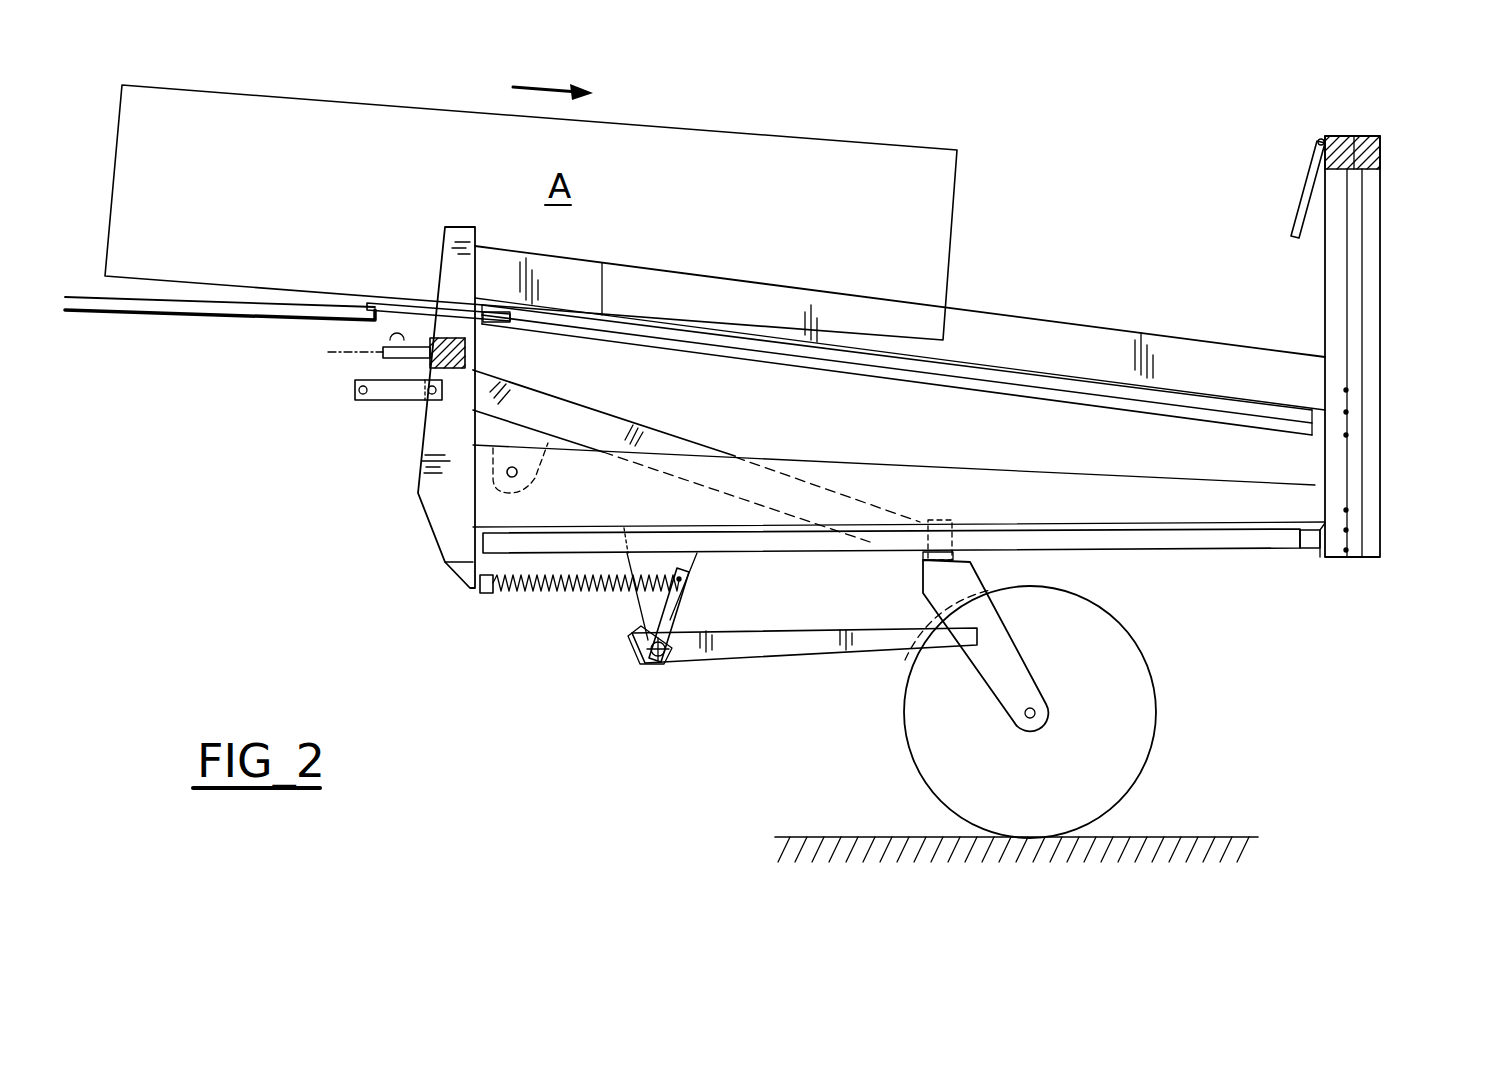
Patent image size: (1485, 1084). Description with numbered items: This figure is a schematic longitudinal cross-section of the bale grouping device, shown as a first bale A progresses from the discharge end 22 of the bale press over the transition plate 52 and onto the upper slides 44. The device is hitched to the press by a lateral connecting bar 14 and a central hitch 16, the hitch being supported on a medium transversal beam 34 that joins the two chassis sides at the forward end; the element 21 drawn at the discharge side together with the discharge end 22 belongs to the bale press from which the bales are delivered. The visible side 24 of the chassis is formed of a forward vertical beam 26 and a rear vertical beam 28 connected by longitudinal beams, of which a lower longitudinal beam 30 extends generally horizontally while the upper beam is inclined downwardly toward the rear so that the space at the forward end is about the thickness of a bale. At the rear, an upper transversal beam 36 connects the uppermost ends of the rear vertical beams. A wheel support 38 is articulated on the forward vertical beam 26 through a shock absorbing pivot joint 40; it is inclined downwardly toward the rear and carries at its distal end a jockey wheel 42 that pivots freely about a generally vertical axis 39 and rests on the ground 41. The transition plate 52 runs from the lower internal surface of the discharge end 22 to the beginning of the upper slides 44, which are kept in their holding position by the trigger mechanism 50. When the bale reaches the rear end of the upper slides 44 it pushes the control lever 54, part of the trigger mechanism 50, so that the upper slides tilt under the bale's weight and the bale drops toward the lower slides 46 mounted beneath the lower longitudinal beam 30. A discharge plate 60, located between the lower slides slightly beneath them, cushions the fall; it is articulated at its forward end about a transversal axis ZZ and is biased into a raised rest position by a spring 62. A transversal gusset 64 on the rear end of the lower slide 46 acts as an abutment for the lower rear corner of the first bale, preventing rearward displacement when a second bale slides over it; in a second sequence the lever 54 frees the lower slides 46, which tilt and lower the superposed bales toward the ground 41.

The lateral connecting bar 14 is at (387, 393).
The central hitch 16 is at (373, 357).
The conveyor belt 21 is at (188, 312).
The discharge end 22 is at (220, 348).
The right side of chassis 24 is at (1073, 363).
The forward vertical beam 26 is at (438, 480).
The rear vertical beam 28 is at (1372, 380).
The lower longitudinal beam 30 is at (1003, 508).
The medium transversal beam 34 is at (470, 355).
The upper transversal beam 36 is at (1374, 140).
The wheel support 38 is at (650, 435).
The vertical pivot axis 39 is at (937, 538).
The shock absorbing pivot joint 40 is at (527, 463).
The ground 41 is at (1210, 837).
The jockey wheel 42 is at (1133, 688).
The upper slide 44 is at (1055, 387).
The lower slide 46 is at (1063, 540).
The trigger mechanism 50 is at (1349, 285).
The transition plate 52 is at (405, 301).
The control lever 54 is at (1300, 198).
The discharge plate 60 is at (807, 642).
The spring 62 is at (563, 590).
The transversal gusset 64 is at (1307, 553).
The transversal axis ZZ is at (660, 660).